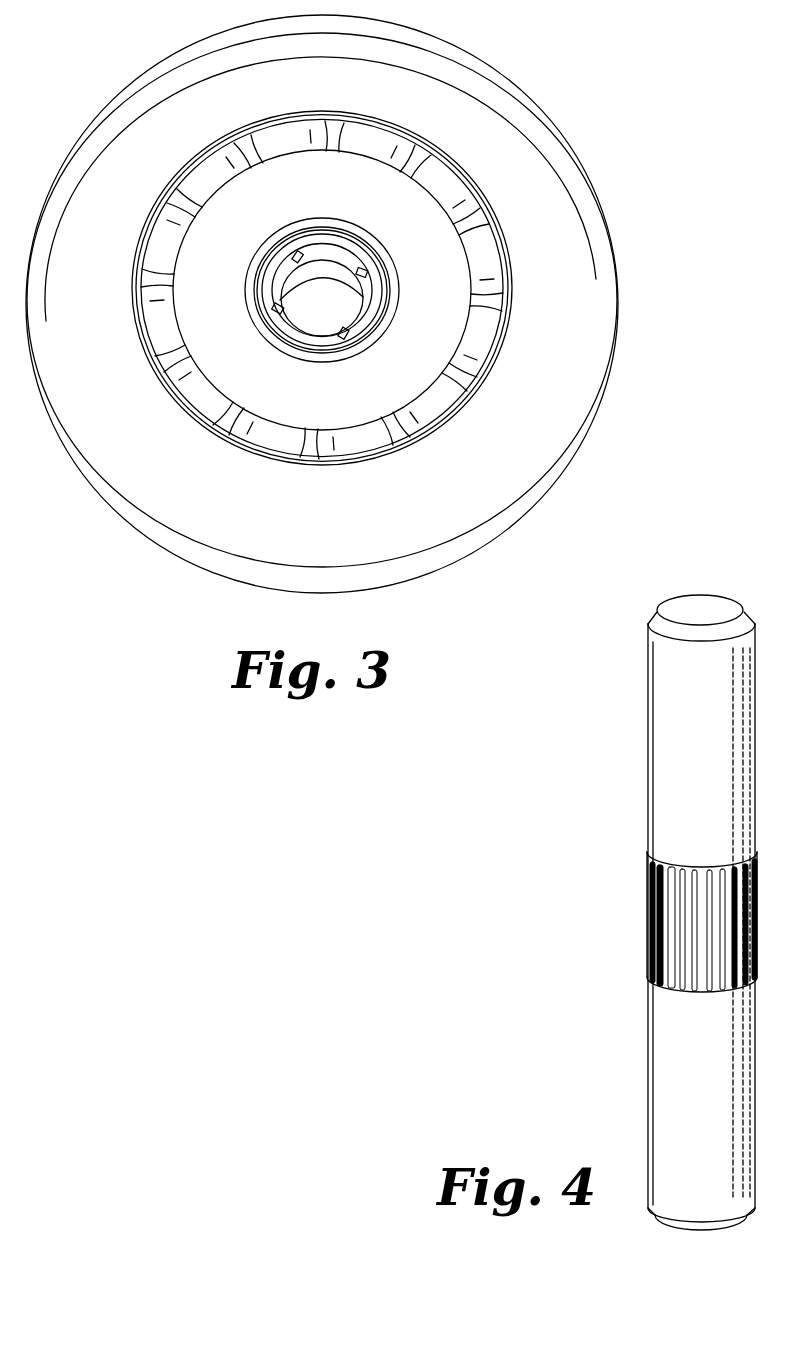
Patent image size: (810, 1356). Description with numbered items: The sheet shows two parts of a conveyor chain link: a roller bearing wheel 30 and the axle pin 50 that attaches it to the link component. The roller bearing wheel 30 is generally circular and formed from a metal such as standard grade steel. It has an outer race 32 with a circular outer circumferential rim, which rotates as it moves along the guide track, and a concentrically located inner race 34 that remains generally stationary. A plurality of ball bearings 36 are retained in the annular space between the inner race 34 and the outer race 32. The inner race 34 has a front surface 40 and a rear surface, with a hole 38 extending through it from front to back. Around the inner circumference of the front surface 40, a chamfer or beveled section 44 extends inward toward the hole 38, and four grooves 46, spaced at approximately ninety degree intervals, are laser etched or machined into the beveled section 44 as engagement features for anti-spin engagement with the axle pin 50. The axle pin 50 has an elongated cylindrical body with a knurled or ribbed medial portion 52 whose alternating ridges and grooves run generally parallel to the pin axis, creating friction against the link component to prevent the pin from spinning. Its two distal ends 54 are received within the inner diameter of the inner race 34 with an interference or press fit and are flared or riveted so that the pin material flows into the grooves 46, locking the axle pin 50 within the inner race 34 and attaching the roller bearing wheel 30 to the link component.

In FIG. 3, the roller bearing wheel 30 is at (77, 100).
In FIG. 3, the outer race 32 is at (557, 208).
In FIG. 3, the inner race 34 is at (430, 243).
In FIG. 3, the ball bearings 36 is at (472, 352).
In FIG. 3, the hole 38 is at (323, 303).
In FIG. 3, the front surface 40 is at (558, 300).
In FIG. 3, the beveled section 44 is at (272, 278).
In FIG. 3, the grooves 46 is at (297, 252).
In FIG. 4, the axle pin 50 is at (565, 798).
In FIG. 4, the medial portion 52 is at (632, 855).
In FIG. 4, the distal ends 54 is at (693, 603).